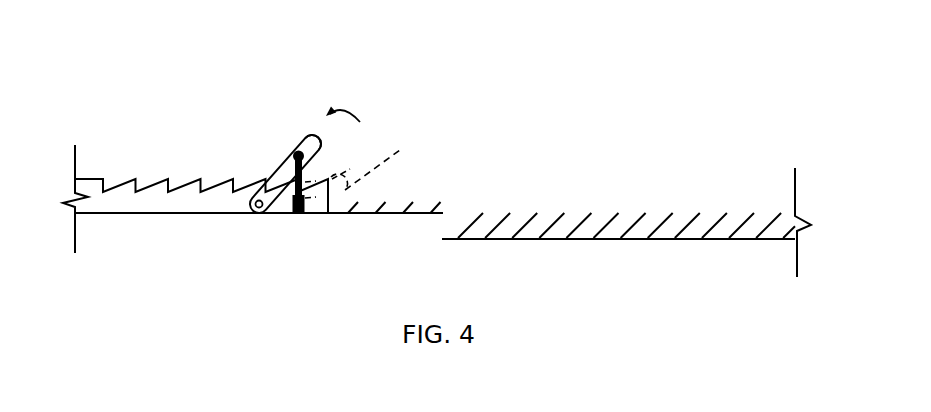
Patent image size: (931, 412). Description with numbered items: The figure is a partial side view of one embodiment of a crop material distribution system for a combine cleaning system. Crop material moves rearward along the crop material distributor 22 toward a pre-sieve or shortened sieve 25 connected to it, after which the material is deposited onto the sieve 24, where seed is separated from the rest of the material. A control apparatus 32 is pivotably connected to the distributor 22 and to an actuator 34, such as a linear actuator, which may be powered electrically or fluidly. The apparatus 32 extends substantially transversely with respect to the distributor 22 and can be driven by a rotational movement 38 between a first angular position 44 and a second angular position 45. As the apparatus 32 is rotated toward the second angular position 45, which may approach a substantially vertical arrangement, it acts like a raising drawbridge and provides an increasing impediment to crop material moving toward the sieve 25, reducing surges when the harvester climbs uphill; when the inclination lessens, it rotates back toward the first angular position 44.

The crop material distributor 22 is at (145, 188).
The sieve 24 is at (643, 238).
The pre-sieve or shortened sieve 25 is at (415, 212).
The control apparatus 32 is at (277, 169).
The actuator 34 is at (304, 203).
The rotational movement 38 is at (368, 150).
The first angular position 44 is at (368, 168).
The second angular position 45 is at (307, 135).